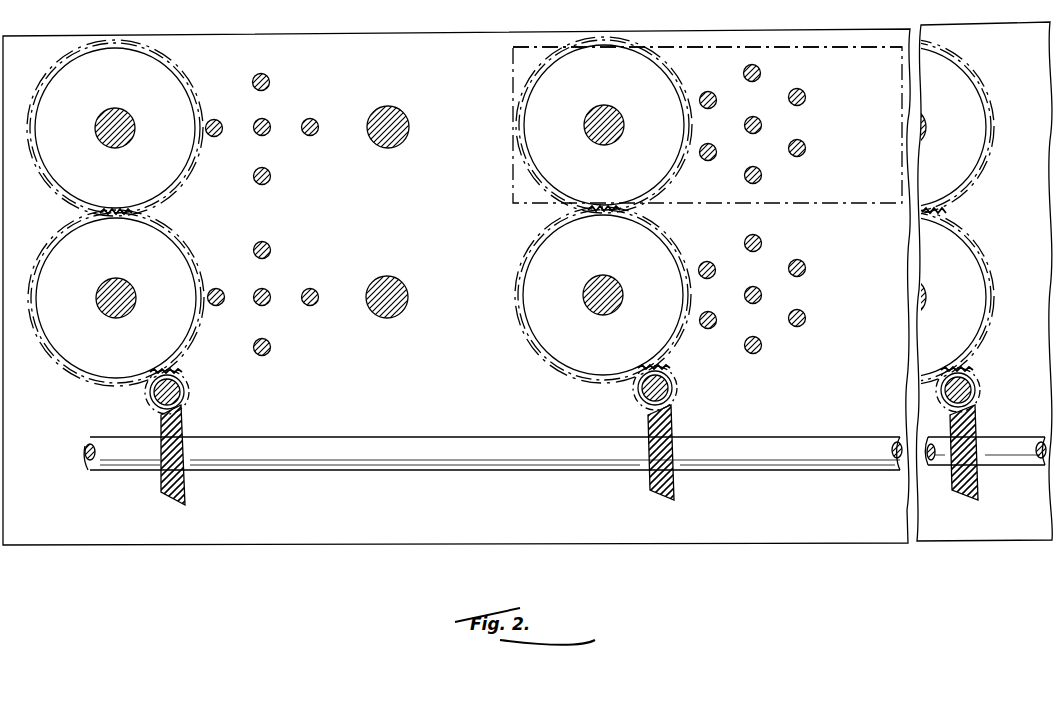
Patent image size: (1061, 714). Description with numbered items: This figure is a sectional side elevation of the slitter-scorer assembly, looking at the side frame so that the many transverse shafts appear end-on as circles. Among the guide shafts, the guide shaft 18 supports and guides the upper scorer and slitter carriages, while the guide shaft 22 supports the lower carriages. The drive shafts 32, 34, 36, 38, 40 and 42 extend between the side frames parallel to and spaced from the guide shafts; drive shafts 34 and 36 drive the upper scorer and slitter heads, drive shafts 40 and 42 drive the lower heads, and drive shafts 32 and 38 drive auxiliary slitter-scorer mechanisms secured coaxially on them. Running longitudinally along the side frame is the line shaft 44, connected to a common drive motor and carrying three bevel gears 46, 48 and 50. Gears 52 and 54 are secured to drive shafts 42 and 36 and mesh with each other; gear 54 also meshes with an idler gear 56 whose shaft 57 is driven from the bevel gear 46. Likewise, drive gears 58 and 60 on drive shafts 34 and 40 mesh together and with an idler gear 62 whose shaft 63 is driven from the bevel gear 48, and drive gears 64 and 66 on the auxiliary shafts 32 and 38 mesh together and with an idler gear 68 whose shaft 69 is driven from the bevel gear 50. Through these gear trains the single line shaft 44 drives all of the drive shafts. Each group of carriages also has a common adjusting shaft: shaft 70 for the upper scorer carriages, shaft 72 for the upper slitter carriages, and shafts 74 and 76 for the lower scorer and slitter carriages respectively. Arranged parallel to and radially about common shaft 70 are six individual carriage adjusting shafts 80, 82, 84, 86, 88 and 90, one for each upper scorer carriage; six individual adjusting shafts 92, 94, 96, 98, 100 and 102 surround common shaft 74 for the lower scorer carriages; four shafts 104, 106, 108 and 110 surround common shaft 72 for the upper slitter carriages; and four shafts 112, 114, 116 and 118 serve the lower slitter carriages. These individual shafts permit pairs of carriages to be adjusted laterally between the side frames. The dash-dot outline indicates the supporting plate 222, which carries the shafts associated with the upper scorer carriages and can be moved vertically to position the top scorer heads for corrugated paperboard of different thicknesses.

The guide shaft 18 is at (403, 112).
The guide shaft 22 is at (396, 277).
The drive shaft 32 is at (925, 122).
The drive shaft 34 is at (620, 112).
The drive shaft 36 is at (131, 117).
The drive shaft 38 is at (923, 278).
The drive shaft 40 is at (618, 283).
The drive shaft 42 is at (130, 287).
The line shaft 44 is at (362, 470).
The bevel gear 46 is at (168, 497).
The bevel gear 48 is at (660, 496).
The bevel gear 50 is at (982, 492).
The gear 52 is at (165, 56).
The gear 54 is at (83, 380).
The idler gear 56 is at (190, 390).
The shaft 57 is at (152, 402).
The drive gear 58 is at (526, 180).
The drive gear 60 is at (519, 272).
The idler gear 62 is at (678, 386).
The shaft 63 is at (638, 398).
The drive gear 64 is at (988, 90).
The drive gear 66 is at (992, 262).
The idler gear 68 is at (980, 388).
The shaft 69 is at (945, 393).
The common adjusting shaft 70 is at (757, 117).
The common adjusting shaft 72 is at (267, 120).
The common adjusting shaft 74 is at (757, 287).
The common adjusting shaft 76 is at (267, 290).
The individual carriage adjusting shaft 80 is at (758, 67).
The individual carriage adjusting shaft 82 is at (805, 93).
The individual carriage adjusting shaft 84 is at (805, 150).
The individual carriage adjusting shaft 86 is at (761, 178).
The individual carriage adjusting shaft 88 is at (708, 161).
The individual carriage adjusting shaft 90 is at (709, 91).
The individual carriage adjusting shaft 92 is at (758, 237).
The individual carriage adjusting shaft 94 is at (803, 262).
The individual carriage adjusting shaft 96 is at (805, 320).
The individual carriage adjusting shaft 98 is at (761, 348).
The individual carriage adjusting shaft 100 is at (708, 329).
The individual carriage adjusting shaft 102 is at (709, 261).
The individual carriage adjusting shaft 104 is at (267, 76).
The individual carriage adjusting shaft 106 is at (315, 120).
The individual carriage adjusting shaft 108 is at (269, 181).
The individual carriage adjusting shaft 110 is at (218, 119).
The individual carriage adjusting shaft 112 is at (269, 245).
The individual carriage adjusting shaft 114 is at (315, 290).
The individual carriage adjusting shaft 116 is at (269, 352).
The individual carriage adjusting shaft 118 is at (220, 290).
The supporting plate 222 is at (738, 47).